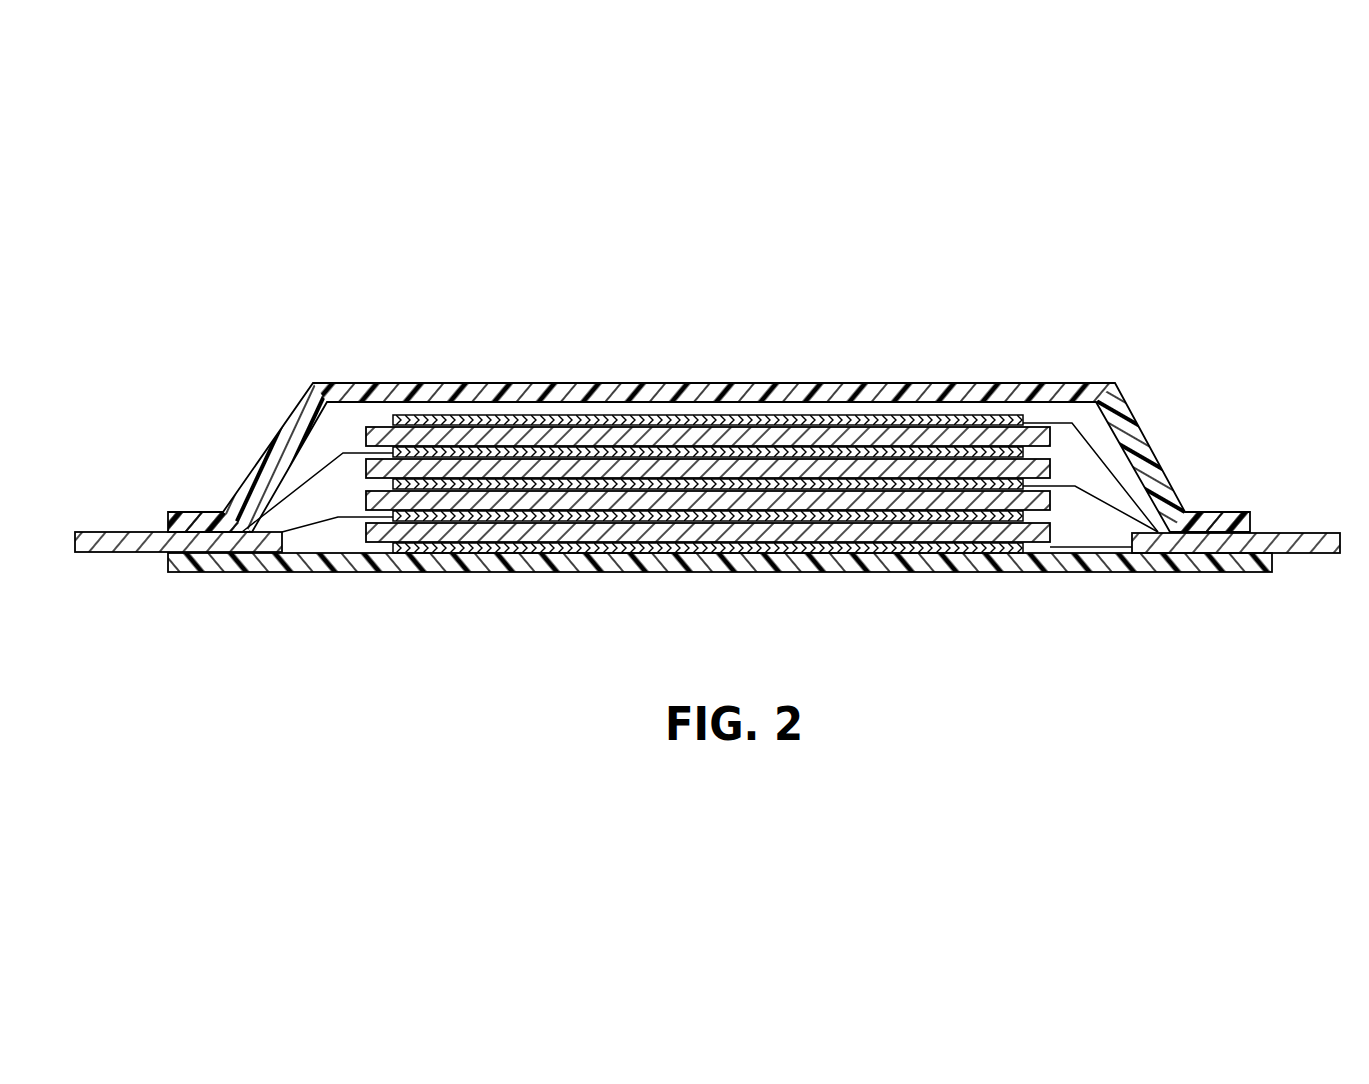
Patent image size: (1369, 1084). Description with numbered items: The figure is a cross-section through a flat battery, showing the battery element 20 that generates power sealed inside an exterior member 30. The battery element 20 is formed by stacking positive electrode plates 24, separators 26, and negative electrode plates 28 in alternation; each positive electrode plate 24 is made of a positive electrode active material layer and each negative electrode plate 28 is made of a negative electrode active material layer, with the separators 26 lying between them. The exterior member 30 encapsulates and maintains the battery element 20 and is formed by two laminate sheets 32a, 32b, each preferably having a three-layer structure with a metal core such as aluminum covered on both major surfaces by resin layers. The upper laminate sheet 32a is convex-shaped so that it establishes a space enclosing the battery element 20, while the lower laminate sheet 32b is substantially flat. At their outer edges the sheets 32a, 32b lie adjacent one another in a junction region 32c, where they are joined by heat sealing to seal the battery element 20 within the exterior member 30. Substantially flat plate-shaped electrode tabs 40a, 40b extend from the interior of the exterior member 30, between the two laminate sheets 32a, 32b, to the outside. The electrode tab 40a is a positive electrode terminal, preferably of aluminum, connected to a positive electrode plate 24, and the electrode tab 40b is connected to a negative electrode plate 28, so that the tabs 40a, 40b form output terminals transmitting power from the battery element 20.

The battery element 20 is at (700, 477).
The positive electrode plate 24 is at (735, 517).
The separator 26 is at (425, 470).
The negative electrode plate 28 is at (882, 483).
The exterior member 30 is at (701, 501).
The laminate sheet 32a is at (468, 382).
The laminate sheet 32b is at (315, 573).
The junction region 32c is at (200, 490).
The electrode tab 40a is at (110, 532).
The electrode tab 40b is at (1283, 533).